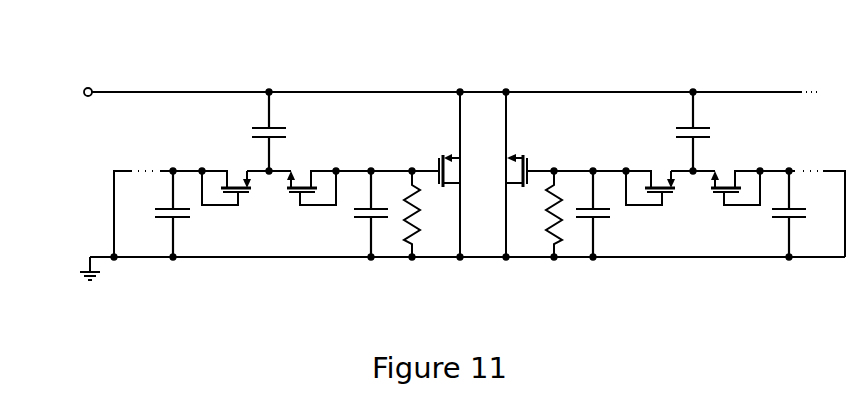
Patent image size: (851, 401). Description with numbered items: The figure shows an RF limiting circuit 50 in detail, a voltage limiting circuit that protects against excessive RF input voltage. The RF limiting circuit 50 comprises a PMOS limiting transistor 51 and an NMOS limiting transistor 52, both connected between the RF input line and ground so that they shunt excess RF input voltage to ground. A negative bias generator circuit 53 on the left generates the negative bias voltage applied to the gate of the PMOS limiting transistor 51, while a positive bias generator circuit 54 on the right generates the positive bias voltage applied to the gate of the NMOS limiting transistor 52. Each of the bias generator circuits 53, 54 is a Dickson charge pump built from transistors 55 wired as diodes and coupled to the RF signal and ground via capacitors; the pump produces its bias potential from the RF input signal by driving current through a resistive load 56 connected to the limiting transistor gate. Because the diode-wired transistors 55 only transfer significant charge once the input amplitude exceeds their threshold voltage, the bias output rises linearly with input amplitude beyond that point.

The RF limiting circuit 50 is at (612, 76).
The PMOS limiting transistor 51 is at (437, 157).
The NMOS limiting transistor 52 is at (529, 157).
The negative bias generator circuit 53 is at (428, 273).
The positive bias generator circuit 54 is at (837, 273).
The transistors wired as diodes 55 is at (246, 180).
The resistive load 56 is at (420, 206).